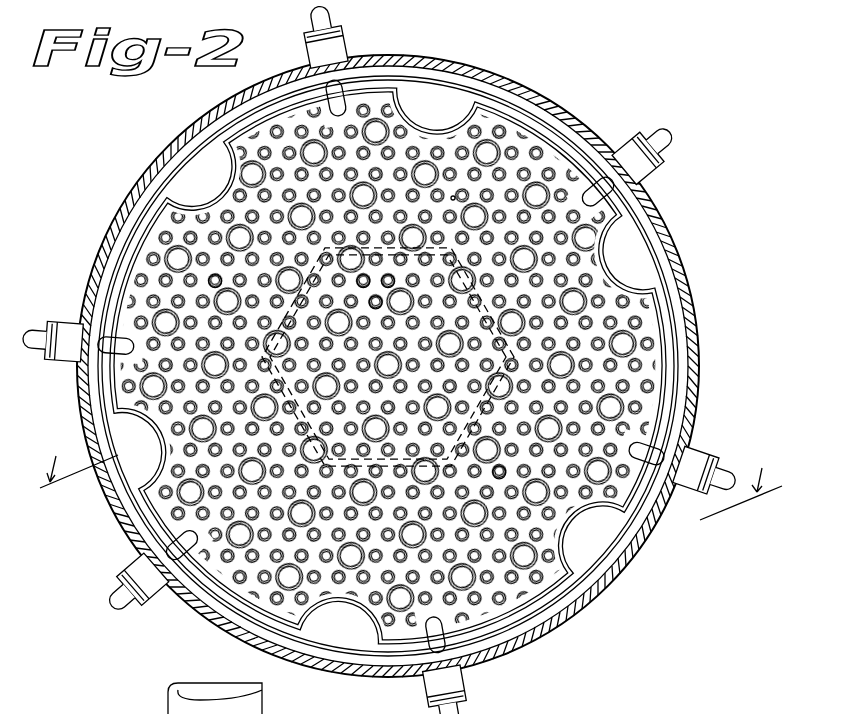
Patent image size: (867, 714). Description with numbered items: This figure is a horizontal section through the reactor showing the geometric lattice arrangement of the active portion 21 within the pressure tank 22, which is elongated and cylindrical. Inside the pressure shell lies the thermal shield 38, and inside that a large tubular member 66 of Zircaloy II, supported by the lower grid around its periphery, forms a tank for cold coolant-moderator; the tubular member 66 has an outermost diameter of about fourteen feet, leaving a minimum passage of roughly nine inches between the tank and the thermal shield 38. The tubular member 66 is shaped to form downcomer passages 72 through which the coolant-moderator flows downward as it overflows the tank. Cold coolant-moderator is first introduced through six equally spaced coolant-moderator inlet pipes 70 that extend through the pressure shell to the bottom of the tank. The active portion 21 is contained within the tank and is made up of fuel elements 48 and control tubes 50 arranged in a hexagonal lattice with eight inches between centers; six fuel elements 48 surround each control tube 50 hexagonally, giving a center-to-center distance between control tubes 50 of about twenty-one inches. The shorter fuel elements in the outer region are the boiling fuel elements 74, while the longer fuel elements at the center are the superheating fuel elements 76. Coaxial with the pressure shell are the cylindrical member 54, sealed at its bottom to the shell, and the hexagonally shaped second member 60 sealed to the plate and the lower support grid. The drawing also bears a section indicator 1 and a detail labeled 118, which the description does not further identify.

The active portion 21 is at (138, 236).
The pressure tank 22 is at (672, 256).
The thermal shield 38 is at (668, 291).
The tubular member 66 is at (507, 115).
The downcomer passages 72 is at (447, 97).
The control tubes 50 is at (330, 393).
The coolant-moderator inlet pipes 70 is at (666, 132).
The boiling fuel elements 74 is at (222, 281).
The fuel elements 48 is at (387, 274).
The superheating fuel elements 76 is at (405, 324).
The cylindrical member 54 is at (522, 392).
The second member 60 is at (320, 480).
The flange 118 is at (180, 689).
The section line 1- 1 is at (411, 477).